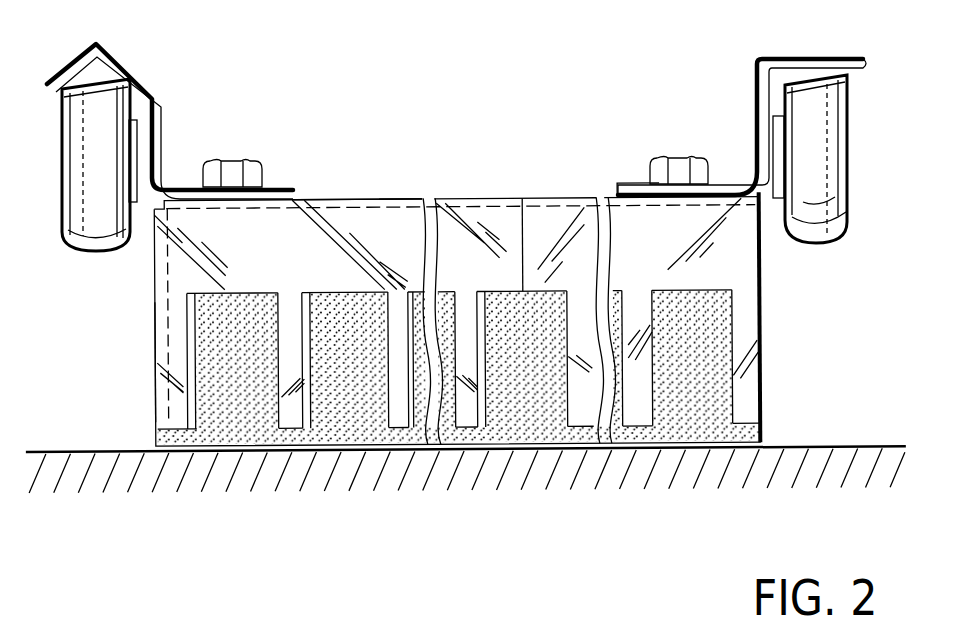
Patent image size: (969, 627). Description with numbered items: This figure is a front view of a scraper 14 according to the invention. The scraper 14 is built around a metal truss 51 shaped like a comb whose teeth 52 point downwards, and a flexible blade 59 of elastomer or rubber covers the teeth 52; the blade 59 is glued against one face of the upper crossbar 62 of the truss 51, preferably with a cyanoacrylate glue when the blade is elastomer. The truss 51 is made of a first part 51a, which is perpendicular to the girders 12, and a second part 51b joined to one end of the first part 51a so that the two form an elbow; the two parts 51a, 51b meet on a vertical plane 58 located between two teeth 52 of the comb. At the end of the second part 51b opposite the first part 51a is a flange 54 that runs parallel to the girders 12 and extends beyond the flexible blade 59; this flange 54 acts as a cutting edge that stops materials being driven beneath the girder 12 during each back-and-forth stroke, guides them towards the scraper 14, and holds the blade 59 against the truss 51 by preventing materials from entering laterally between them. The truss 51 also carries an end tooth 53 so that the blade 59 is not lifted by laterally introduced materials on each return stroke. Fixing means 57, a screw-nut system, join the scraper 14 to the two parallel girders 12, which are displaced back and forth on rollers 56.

The girders 12 is at (156, 108).
The scraper 14 is at (402, 184).
The metal truss 51 is at (786, 307).
The first part of the truss 51a is at (634, 168).
The second part of the truss 51b is at (336, 188).
The teeth 52 is at (398, 420).
The end tooth 53 is at (170, 418).
The flange 54 is at (163, 357).
The rollers 56 is at (95, 110).
The fixing means 57 is at (231, 175).
The vertical plane 58 is at (523, 236).
The flexible blade 59 is at (695, 413).
The upper crossbar 62 is at (512, 248).